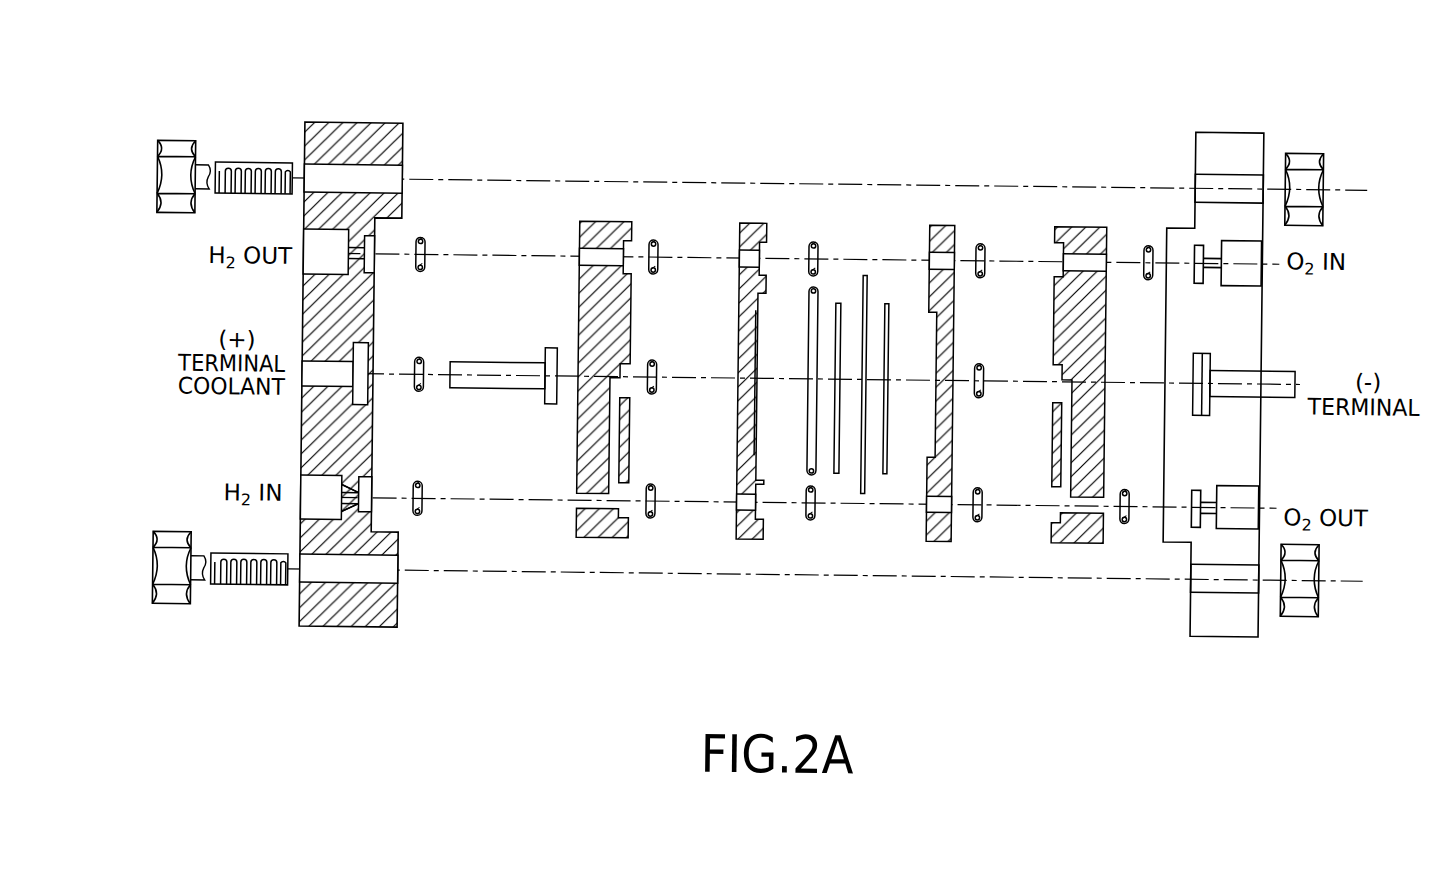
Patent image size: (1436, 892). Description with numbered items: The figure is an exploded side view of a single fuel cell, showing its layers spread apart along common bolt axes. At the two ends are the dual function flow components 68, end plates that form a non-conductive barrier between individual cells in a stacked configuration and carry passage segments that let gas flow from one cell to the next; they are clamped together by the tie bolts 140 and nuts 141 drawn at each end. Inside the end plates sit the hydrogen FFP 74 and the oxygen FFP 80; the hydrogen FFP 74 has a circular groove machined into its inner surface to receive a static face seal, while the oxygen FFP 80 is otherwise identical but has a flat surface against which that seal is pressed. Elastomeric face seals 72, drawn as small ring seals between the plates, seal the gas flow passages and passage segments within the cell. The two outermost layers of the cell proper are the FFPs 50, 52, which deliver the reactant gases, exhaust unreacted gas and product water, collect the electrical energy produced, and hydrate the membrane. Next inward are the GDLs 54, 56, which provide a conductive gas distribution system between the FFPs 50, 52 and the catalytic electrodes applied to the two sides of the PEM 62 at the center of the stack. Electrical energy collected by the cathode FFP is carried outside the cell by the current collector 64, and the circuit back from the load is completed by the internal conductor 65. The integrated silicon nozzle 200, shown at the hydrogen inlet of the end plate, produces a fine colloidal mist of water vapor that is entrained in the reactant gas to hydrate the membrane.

The dual function flow component 68 is at (333, 114).
The tie bolt 140 is at (184, 146).
The nut 141 is at (1321, 153).
The elastomeric face seal 72 is at (422, 238).
The hydrogen FFP 74 is at (612, 218).
The current collector 64 is at (508, 358).
The FFP 50 is at (757, 218).
The GDL 54 is at (838, 468).
The PEM 62 is at (866, 484).
The GDL 56 is at (888, 297).
The FFP 52 is at (945, 218).
The oxygen FFP 80 is at (1090, 218).
The internal conductor 65 is at (1270, 366).
The nozzle 200 is at (353, 506).